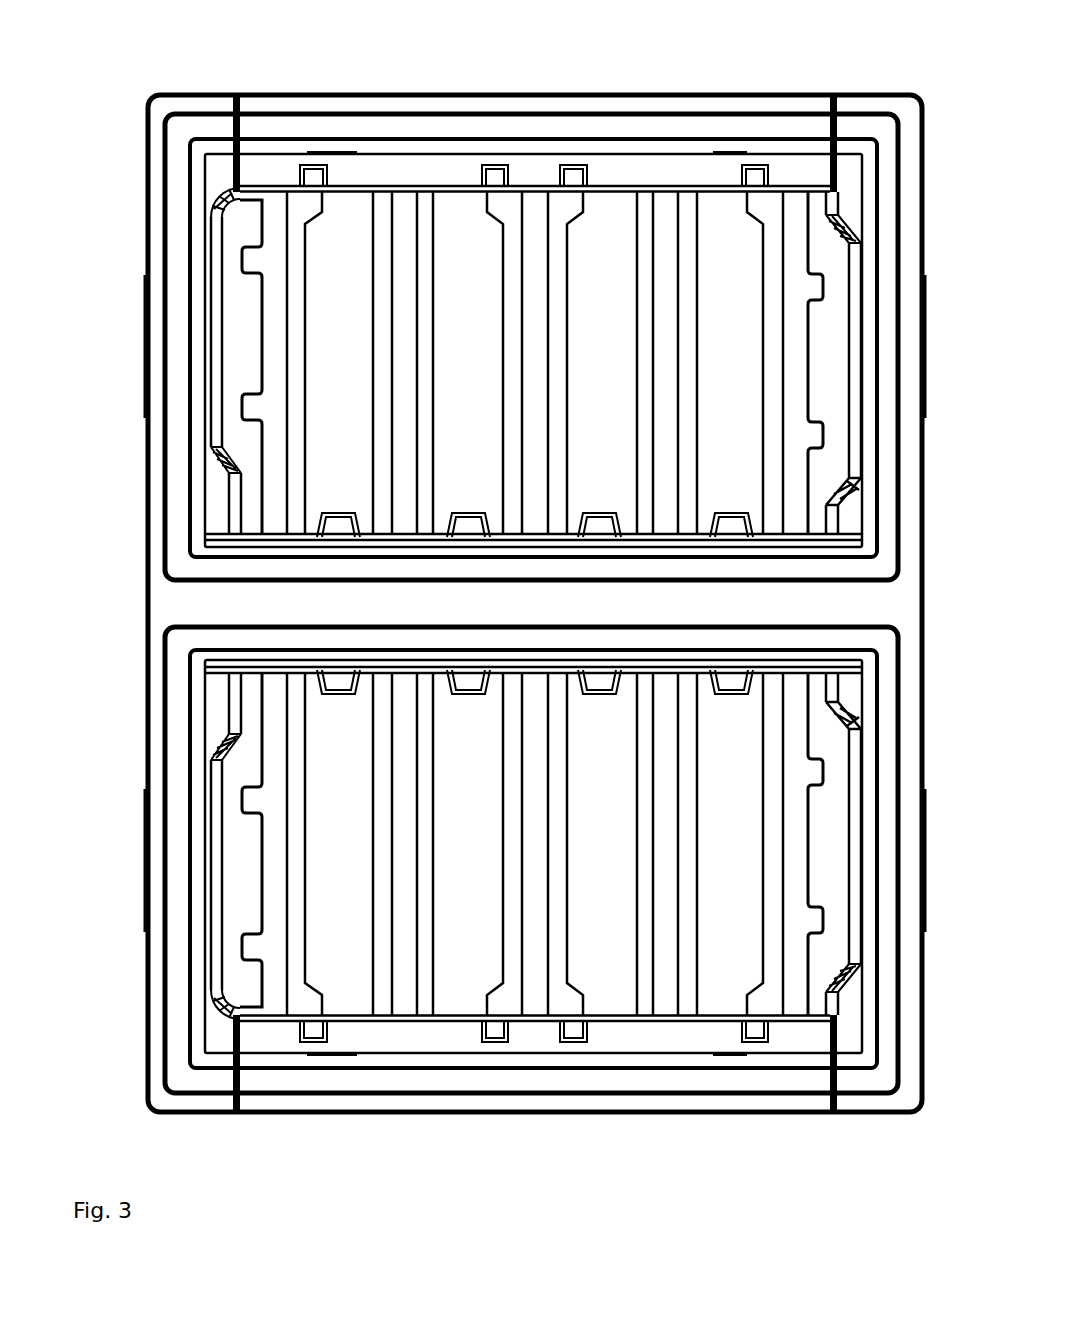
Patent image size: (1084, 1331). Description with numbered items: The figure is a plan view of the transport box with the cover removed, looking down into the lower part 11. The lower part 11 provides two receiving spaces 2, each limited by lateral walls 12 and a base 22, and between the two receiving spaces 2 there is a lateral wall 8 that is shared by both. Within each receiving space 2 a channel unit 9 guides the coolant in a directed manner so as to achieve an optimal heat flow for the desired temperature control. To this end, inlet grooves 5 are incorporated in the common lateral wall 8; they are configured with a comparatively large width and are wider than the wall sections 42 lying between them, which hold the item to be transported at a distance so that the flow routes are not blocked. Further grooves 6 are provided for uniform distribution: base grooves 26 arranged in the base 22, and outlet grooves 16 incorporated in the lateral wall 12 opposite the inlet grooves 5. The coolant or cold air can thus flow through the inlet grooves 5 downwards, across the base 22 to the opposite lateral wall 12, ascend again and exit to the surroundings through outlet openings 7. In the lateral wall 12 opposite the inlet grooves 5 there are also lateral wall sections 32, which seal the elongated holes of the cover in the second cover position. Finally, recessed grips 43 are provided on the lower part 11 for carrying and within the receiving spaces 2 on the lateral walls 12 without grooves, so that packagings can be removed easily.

The receiving space 2 is at (482, 603).
The inlet groove 5 is at (400, 527).
The groove 6 is at (371, 78).
The outlet opening 7 is at (238, 125).
The lateral wall 8 is at (237, 602).
The channel unit 9 is at (272, 362).
The lower part 11 is at (143, 87).
The lateral wall 12 is at (142, 232).
The outlet groove 16 is at (320, 178).
The base 22 is at (600, 242).
The base groove 26 is at (380, 218).
The lateral wall section 32 is at (447, 178).
The wall section 42 is at (333, 527).
The recessed grip 43 is at (230, 330).